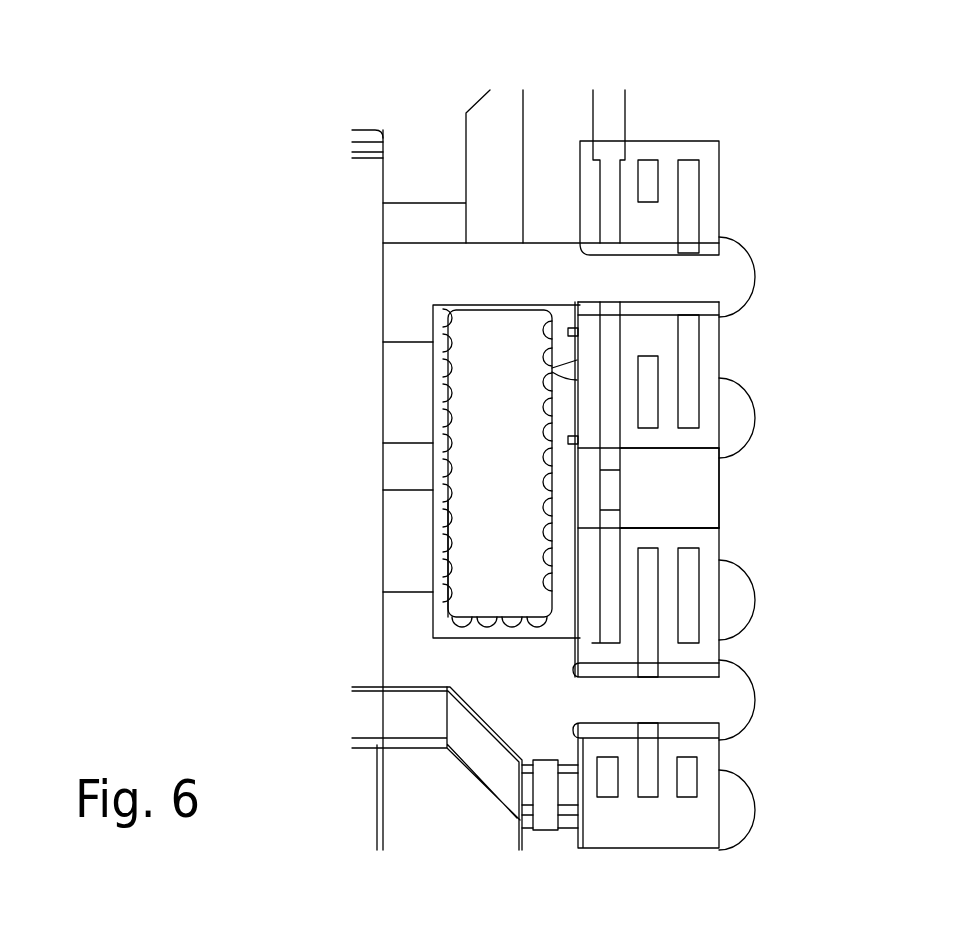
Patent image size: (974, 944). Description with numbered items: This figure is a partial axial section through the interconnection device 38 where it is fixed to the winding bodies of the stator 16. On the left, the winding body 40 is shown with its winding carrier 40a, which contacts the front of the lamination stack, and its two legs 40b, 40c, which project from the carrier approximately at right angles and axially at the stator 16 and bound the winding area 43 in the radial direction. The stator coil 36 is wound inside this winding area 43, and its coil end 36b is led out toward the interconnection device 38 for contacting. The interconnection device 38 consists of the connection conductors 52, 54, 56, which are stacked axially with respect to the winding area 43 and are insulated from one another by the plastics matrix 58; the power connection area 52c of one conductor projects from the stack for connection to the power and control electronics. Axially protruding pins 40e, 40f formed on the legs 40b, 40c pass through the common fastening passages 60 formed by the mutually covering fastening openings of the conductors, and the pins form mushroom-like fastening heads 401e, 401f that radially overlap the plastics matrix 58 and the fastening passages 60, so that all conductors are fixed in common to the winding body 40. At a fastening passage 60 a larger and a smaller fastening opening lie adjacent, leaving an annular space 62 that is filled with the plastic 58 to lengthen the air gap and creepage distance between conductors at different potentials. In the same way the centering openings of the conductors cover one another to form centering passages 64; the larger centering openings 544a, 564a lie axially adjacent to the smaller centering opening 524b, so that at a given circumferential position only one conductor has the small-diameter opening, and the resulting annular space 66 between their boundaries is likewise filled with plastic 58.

The stator 16 is at (268, 413).
The stator coil 36 is at (510, 468).
The coil end 36b is at (550, 823).
The interconnection device 38 is at (776, 387).
The winding body 40 is at (322, 280).
The winding carrier 40a is at (412, 378).
The leg 40b is at (473, 668).
The leg 40c is at (497, 268).
The pin 40e is at (700, 277).
The pin 40f is at (687, 703).
The fastening head 401e is at (743, 278).
The fastening head 401f is at (733, 712).
The winding area 43 is at (478, 558).
The connection conductor 52 is at (607, 787).
The power connection area 52c is at (610, 110).
The smaller centering opening 524b is at (603, 510).
The connection conductor 54 is at (652, 787).
The larger centering opening 544a is at (647, 428).
The connection conductor 56 is at (685, 793).
The larger centering opening 564a is at (683, 430).
The plastics matrix 58 is at (708, 362).
The fastening passage 60 is at (647, 247).
The annular space 62 is at (653, 227).
The centering passage 64 is at (687, 493).
The annular space 66 is at (625, 540).